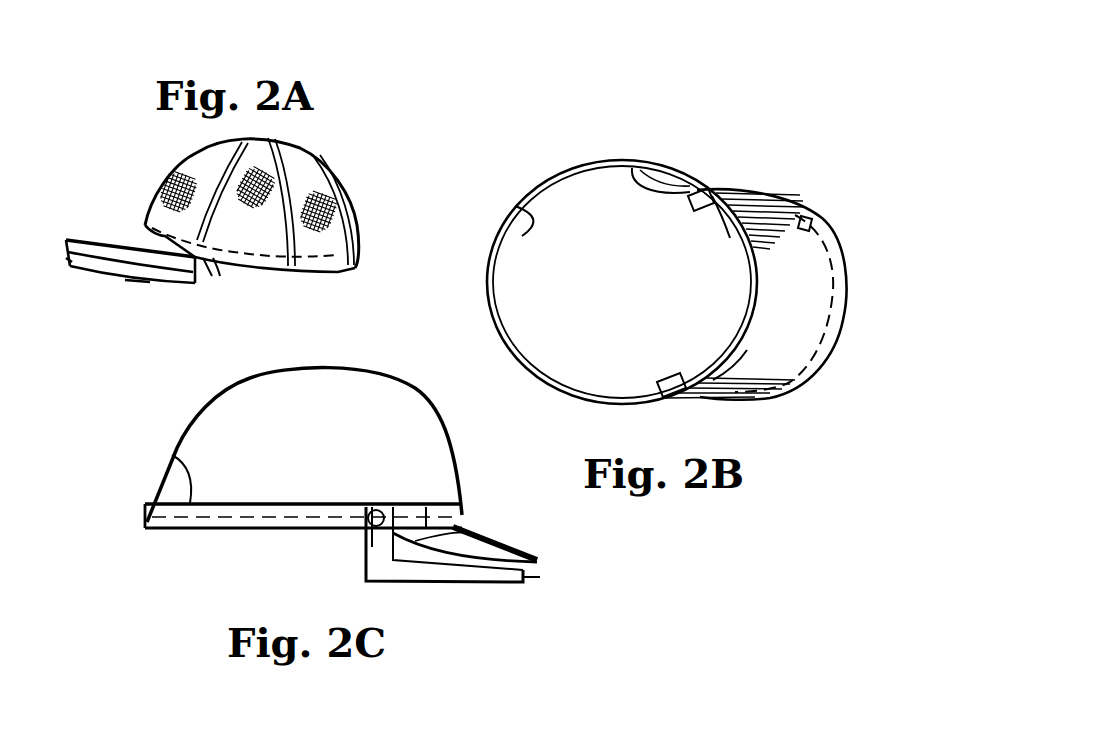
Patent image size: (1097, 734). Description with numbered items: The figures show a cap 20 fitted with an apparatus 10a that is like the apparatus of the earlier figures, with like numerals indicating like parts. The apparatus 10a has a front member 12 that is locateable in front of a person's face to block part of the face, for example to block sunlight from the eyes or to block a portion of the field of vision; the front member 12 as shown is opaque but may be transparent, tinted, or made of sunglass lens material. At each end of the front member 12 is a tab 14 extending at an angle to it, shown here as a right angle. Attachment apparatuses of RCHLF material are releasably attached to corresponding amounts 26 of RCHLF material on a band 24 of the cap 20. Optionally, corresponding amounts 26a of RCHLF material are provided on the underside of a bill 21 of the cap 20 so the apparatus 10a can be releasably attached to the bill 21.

In FIG. 2A, the apparatus 10a is at (142, 284).
In FIG. 2C, the apparatus 10a is at (542, 578).
In FIG. 2A, the front member 12 is at (72, 265).
In FIG. 2B, the front member 12 is at (830, 196).
In FIG. 2C, the front member 12 is at (450, 577).
In FIG. 2B, the tab 14 is at (739, 203).
In FIG. 2C, the tab 14 is at (365, 553).
In FIG. 2A, the cap 20 is at (334, 143).
In FIG. 2B, the cap 20 is at (478, 297).
In FIG. 2C, the cap 20 is at (256, 358).
In FIG. 2A, the bill 21 is at (106, 236).
In FIG. 2B, the bill 21 is at (790, 297).
In FIG. 2C, the bill 21 is at (532, 494).
In FIG. 2A, the band 24 is at (246, 263).
In FIG. 2B, the band 24 is at (630, 168).
In FIG. 2C, the band 24 is at (172, 452).
In FIG. 2A, the corresponding amounts of RCHLF material 26 is at (214, 262).
In FIG. 2B, the corresponding amounts of RCHLF material 26 is at (700, 190).
In FIG. 2C, the corresponding amounts of RCHLF material 26 is at (366, 530).
In FIG. 2B, the corresponding amounts of RCHLF material 26a is at (731, 240).
In FIG. 2C, the corresponding amounts of RCHLF material 26a is at (440, 512).